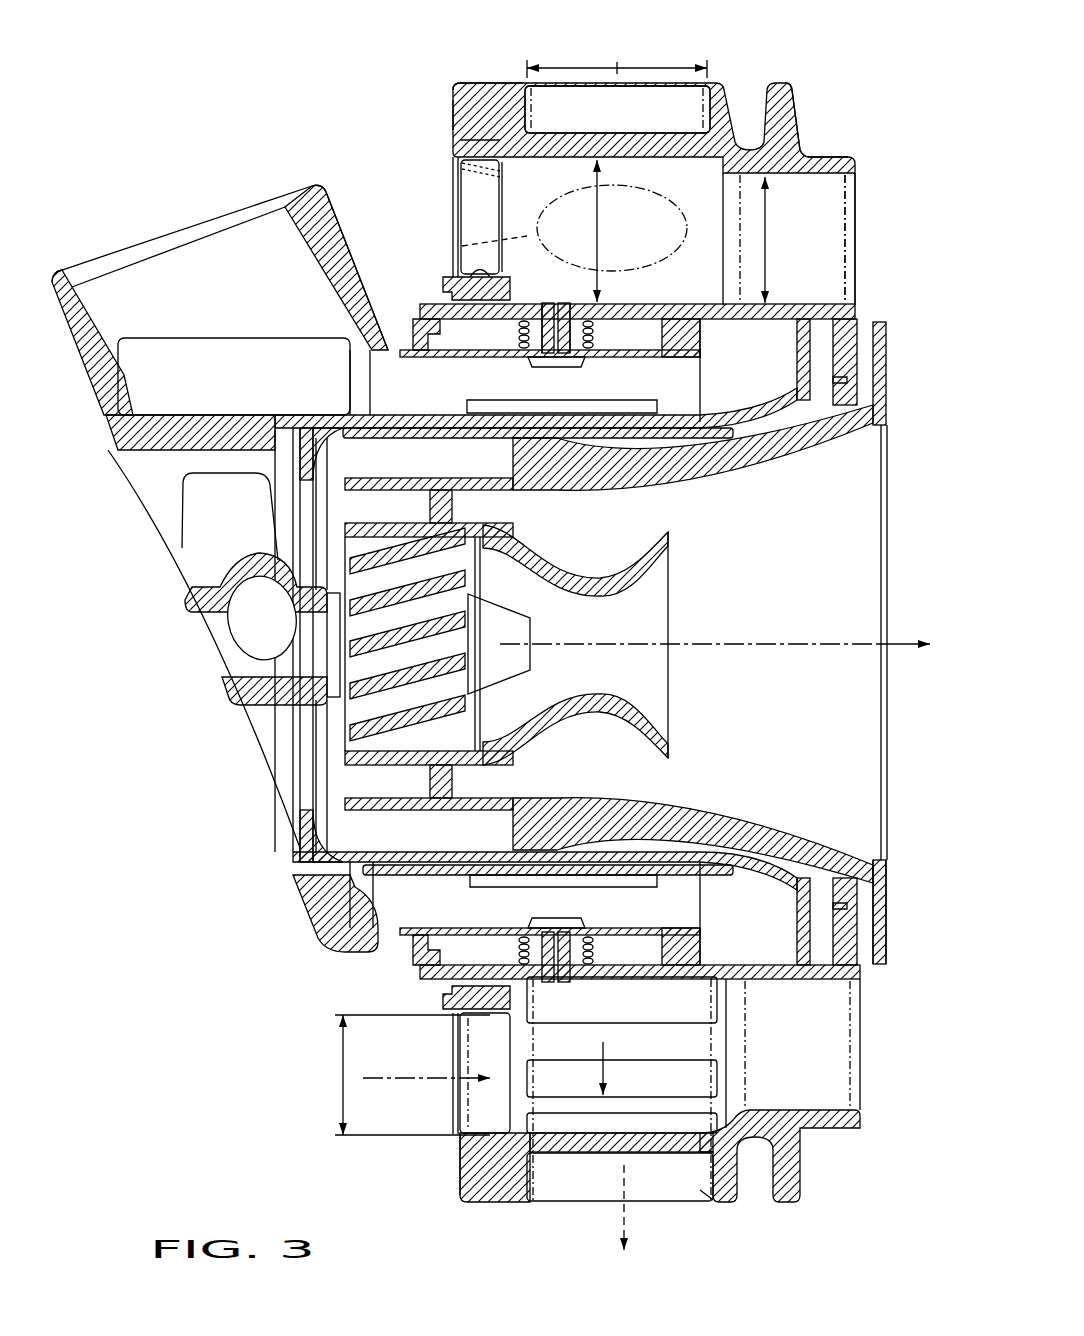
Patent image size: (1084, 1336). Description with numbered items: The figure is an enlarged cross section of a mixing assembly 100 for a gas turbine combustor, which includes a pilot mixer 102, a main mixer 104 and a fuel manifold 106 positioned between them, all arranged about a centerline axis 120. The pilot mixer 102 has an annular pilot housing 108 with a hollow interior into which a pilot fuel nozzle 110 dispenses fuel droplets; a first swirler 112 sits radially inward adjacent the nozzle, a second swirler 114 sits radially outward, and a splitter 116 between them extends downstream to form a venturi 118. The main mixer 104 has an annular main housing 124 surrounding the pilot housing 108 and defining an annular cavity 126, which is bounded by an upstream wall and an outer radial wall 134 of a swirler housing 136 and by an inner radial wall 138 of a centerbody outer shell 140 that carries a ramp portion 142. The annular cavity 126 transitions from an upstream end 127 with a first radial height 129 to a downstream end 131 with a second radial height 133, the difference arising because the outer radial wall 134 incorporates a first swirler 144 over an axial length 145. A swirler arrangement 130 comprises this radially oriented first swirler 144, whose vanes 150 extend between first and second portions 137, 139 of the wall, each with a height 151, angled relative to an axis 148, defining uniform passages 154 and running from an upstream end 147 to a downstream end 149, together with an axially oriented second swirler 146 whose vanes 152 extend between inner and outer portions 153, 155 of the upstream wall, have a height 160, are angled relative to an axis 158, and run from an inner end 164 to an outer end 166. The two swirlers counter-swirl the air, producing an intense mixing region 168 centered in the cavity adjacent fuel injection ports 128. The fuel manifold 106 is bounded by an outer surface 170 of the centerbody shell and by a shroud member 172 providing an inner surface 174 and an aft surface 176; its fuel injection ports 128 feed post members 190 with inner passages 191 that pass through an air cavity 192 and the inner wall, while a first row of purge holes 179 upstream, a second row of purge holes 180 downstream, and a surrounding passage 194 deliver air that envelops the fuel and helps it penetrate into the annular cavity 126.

The mixing assembly 100 is at (280, 108).
The pilot mixer 102 is at (845, 514).
The main mixer 104 is at (857, 265).
The fuel manifold 106 is at (432, 380).
The pilot housing 108 is at (860, 848).
The pilot fuel nozzle 110 is at (520, 643).
The first swirler 112 is at (487, 718).
The second swirler 114 is at (490, 790).
The splitter 116 is at (335, 768).
The venturi 118 is at (585, 576).
The centerline axis 120 is at (693, 640).
The main housing 124 is at (805, 150).
The annular cavity 126 is at (787, 203).
The upstream end 127 is at (517, 212).
The fuel injection ports 128 is at (572, 367).
The first radial height 129 is at (597, 198).
The swirler arrangement 130 is at (427, 118).
The downstream end 131 is at (838, 240).
The second radial height 133 is at (765, 240).
The outer radial wall 134 is at (467, 100).
The swirler housing 136 is at (450, 107).
The first portion 137 is at (483, 1195).
The inner radial wall 138 is at (760, 982).
The second portion 139 is at (732, 1190).
The centerbody outer shell 140 is at (838, 318).
The ramp portion 142 is at (648, 980).
The first swirler 144 is at (638, 66).
The axial length 145 is at (584, 60).
The second swirler 146 is at (452, 199).
The upstream end 147 is at (537, 1203).
The axis 148 is at (618, 1208).
The downstream end 149 is at (695, 1203).
The vanes 150 is at (697, 1092).
The height 151 is at (668, 48).
The vanes 152 is at (488, 1043).
The inner portion 153 is at (445, 1005).
The passages 154 is at (605, 1050).
The outer portion 155 is at (462, 1172).
The axis 158 is at (443, 1094).
The height 160 is at (343, 1086).
The inner end 164 is at (478, 271).
The outer end 166 is at (470, 160).
The intense mixing region 168 is at (462, 245).
The outer surface 170 is at (717, 330).
The shroud member 172 is at (643, 437).
The inner surface 174 is at (718, 410).
The aft surface 176 is at (792, 360).
The first row of purge holes 179 is at (523, 345).
The second row of purge holes 180 is at (592, 340).
The post member 190 is at (598, 264).
The inner passage 191 is at (560, 303).
The air cavity 192 is at (500, 339).
The passage 194 is at (622, 985).